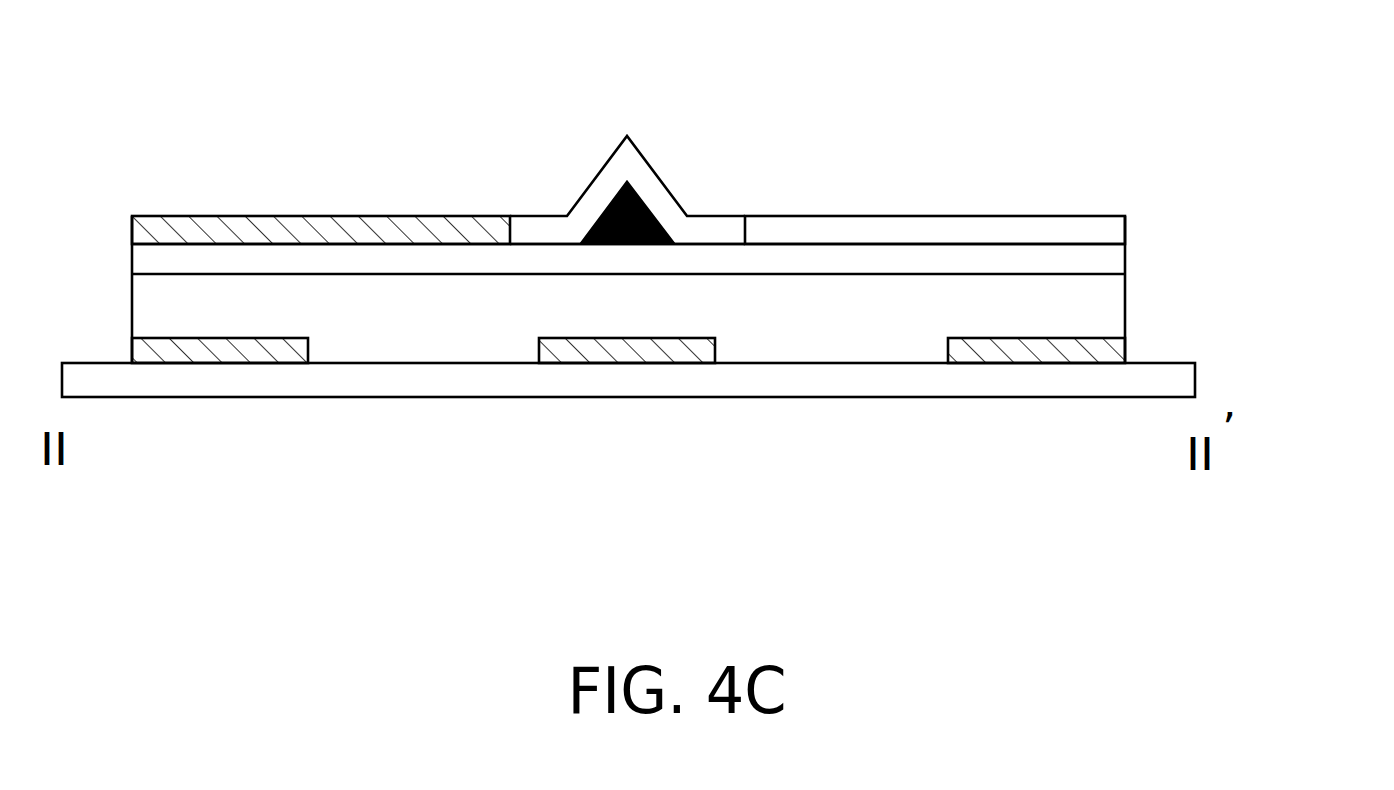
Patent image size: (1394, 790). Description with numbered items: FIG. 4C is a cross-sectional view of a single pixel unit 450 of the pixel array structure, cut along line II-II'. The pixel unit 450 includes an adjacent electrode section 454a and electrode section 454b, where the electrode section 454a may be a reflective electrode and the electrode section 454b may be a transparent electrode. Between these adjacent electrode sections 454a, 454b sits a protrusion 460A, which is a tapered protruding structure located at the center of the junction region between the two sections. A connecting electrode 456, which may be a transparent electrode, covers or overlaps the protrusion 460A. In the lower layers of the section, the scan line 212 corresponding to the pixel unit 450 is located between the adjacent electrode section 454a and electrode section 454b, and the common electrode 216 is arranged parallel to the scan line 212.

The pixel unit 450 is at (1365, 590).
The electrode section 454a is at (333, 227).
The electrode section 454b is at (882, 228).
The connecting electrode 456 is at (542, 228).
The protrusion 460A is at (648, 210).
The common electrode 216 is at (208, 352).
The scan line 212 is at (627, 360).